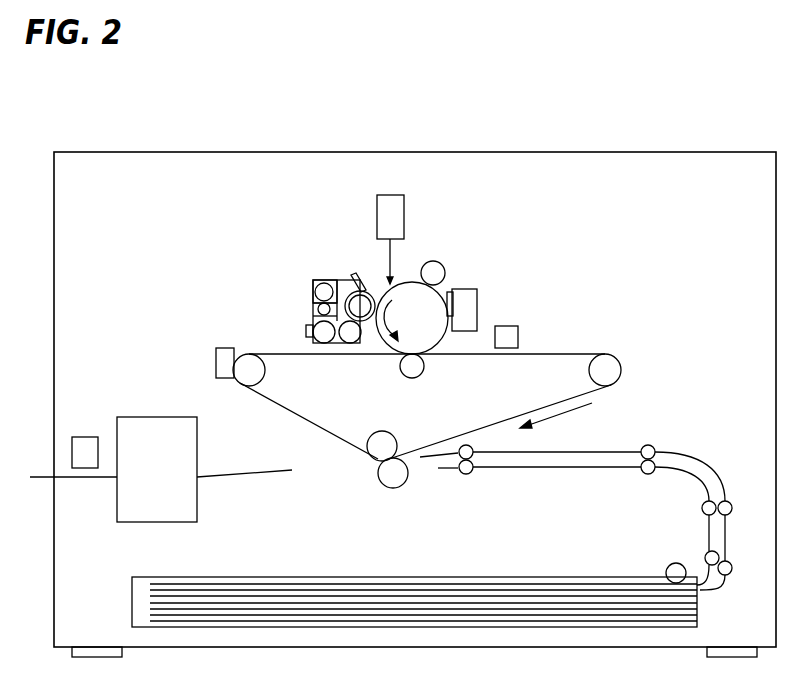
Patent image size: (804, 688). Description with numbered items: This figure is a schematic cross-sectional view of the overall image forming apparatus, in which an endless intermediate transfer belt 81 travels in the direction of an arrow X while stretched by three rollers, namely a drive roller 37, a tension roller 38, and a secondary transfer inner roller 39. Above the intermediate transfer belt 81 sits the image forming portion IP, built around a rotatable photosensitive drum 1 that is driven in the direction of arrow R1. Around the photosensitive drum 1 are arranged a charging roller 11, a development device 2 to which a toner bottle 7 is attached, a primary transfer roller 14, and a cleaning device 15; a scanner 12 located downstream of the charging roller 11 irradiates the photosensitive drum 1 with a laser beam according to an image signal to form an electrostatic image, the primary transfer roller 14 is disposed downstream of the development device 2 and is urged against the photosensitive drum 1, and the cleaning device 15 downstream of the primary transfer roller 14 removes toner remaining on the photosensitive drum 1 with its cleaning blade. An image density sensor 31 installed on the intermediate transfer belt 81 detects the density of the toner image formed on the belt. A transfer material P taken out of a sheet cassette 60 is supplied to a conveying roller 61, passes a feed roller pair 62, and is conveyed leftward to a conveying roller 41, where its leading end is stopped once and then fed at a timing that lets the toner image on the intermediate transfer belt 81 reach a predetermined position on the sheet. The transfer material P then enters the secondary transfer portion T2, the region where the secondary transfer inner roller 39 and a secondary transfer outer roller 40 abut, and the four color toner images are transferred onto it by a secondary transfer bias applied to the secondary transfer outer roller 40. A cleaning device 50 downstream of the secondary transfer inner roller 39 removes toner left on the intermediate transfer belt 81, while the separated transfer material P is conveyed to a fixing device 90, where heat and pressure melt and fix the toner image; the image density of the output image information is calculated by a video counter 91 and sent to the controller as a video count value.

The image forming portion IP is at (264, 220).
The photosensitive drum 1 is at (440, 350).
The arrow R1 is at (400, 320).
The development device 2 is at (345, 277).
The toner bottle 7 is at (318, 280).
The charging roller 11 is at (435, 261).
The scanner 12 is at (377, 218).
The primary transfer roller 14 is at (412, 378).
The cleaning device 15 is at (468, 296).
The image density sensor 31 is at (512, 331).
The drive roller 37 is at (255, 358).
The tension roller 38 is at (621, 370).
The secondary transfer inner roller 39 is at (378, 440).
The secondary transfer outer roller 40 is at (393, 488).
The conveying roller 41 is at (463, 475).
The cleaning device 50 is at (216, 362).
The sheet cassette 60 is at (268, 575).
The conveying roller 61 is at (667, 566).
The feed roller pair 62 is at (705, 556).
The intermediate transfer belt 81 is at (490, 424).
The fixing device 90 is at (140, 522).
The video counter 91 is at (82, 437).
The secondary transfer portion T2 is at (374, 460).
The arrow X is at (556, 423).
The transfer material P is at (538, 585).